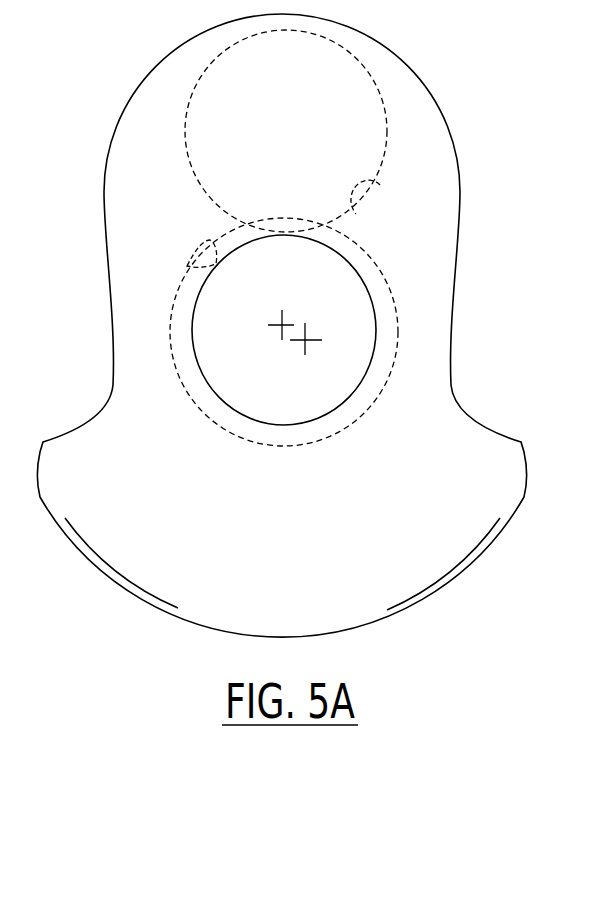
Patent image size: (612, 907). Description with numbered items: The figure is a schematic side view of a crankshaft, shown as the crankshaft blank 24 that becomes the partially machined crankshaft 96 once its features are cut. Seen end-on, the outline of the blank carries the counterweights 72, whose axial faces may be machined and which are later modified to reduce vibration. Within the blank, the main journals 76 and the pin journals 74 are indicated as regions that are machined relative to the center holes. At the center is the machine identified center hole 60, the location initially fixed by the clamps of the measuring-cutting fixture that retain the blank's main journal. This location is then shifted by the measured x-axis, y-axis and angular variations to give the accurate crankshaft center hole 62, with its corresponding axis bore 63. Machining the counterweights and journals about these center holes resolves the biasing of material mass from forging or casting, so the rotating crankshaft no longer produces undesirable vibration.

The crankshaft blank 24 is at (281, 325).
The partially machined crankshaft 96 is at (130, 355).
The counterweights 72 is at (467, 532).
The axis bore 63 is at (365, 288).
The pin journals 74 is at (377, 183).
The main journals 76 is at (187, 265).
The machine identified center hole 60 is at (270, 325).
The center holes 62 is at (305, 340).